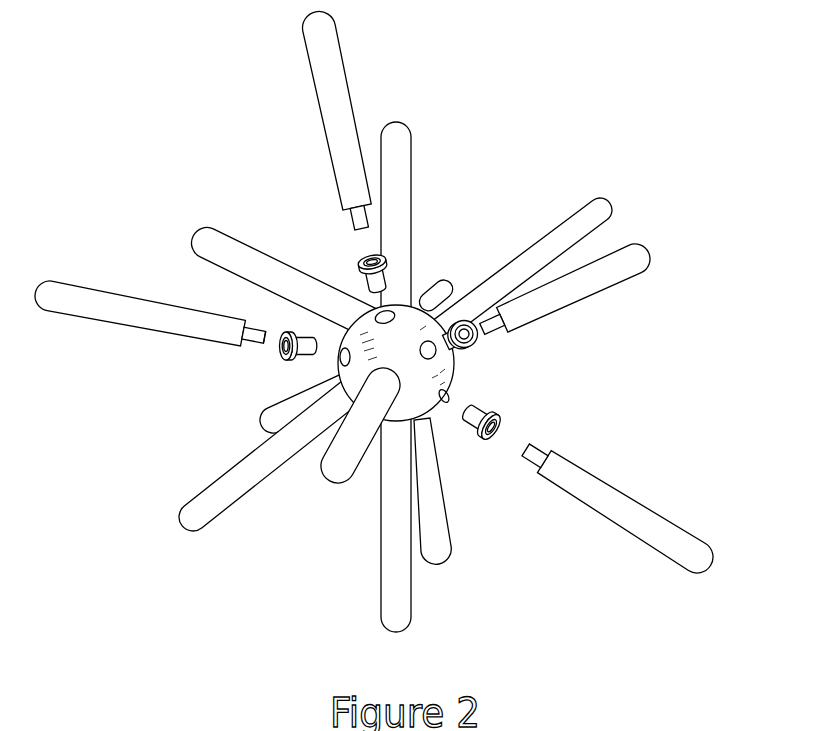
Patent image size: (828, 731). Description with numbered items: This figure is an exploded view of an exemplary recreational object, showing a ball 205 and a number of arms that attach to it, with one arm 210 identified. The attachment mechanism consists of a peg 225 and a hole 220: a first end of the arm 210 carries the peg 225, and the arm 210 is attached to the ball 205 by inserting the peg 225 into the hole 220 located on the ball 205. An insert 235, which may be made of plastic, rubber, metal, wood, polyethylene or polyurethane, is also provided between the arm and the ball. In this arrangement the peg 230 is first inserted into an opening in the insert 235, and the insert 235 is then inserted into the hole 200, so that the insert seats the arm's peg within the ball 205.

The hole 200 is at (205, 143).
The ball 205 is at (363, 310).
The arm 210 is at (130, 298).
The hole 220 is at (452, 398).
The peg 225 is at (247, 350).
The peg 230 is at (268, 333).
The insert 235 is at (297, 363).